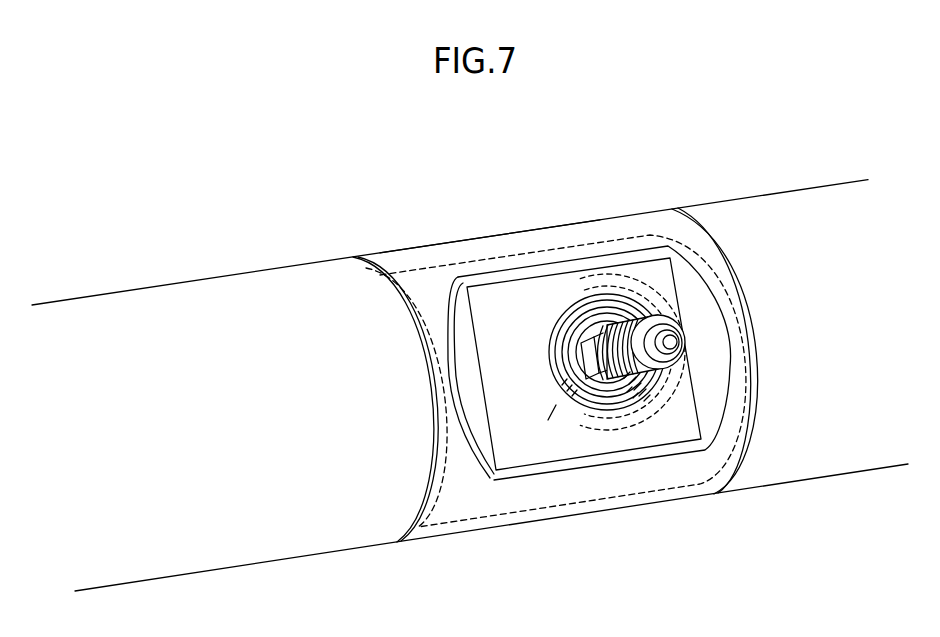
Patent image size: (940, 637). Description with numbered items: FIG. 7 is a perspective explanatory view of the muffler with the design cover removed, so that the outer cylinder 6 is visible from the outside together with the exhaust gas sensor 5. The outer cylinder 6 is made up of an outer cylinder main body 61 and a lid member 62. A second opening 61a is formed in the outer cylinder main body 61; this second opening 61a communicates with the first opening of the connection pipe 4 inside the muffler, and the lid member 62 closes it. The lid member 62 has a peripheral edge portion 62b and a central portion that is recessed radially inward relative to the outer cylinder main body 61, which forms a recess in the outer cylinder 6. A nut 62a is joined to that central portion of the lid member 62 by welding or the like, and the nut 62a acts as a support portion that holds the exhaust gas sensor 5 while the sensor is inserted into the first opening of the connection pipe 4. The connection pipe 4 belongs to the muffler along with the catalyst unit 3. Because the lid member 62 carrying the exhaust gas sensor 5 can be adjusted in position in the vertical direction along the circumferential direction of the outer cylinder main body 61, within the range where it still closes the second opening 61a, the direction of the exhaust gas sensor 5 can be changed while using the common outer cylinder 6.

The catalyst unit 3 is at (660, 464).
The connection pipe 4 is at (552, 412).
The exhaust gas sensor 5 is at (620, 372).
The outer cylinder 6 is at (807, 140).
The outer cylinder main body 61 is at (797, 212).
The second opening 61a is at (560, 248).
The lid member 62 is at (669, 215).
The nut 62a is at (566, 395).
The peripheral edge portion 62b is at (494, 236).